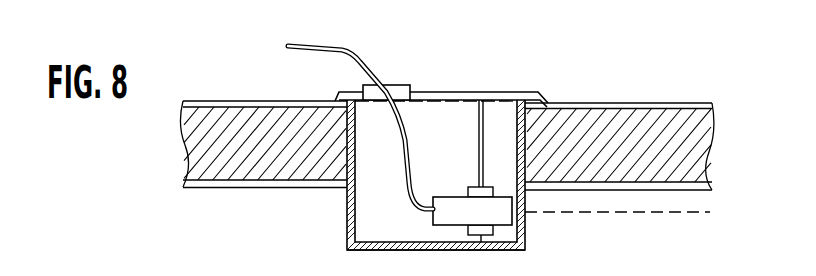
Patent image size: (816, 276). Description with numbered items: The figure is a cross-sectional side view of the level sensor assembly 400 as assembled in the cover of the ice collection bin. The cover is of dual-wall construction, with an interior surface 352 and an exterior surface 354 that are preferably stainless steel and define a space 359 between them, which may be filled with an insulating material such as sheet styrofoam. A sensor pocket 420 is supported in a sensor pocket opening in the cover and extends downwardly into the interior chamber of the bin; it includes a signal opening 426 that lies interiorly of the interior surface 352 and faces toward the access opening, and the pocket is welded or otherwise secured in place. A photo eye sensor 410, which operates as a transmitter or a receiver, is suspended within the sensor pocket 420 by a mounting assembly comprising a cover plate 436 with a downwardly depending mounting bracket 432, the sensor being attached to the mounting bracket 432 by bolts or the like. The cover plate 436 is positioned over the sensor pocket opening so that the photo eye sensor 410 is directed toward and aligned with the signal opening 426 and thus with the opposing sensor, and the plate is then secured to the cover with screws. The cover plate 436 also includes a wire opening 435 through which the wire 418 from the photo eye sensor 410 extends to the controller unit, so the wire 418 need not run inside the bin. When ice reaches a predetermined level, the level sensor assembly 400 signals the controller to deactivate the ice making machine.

The exterior surface 354 is at (232, 101).
The space 359 is at (197, 137).
The interior surface 352 is at (232, 188).
The sensor pocket 420 is at (347, 217).
The cover plate 436 is at (522, 93).
The wire opening 435 is at (403, 84).
The signal opening 426 is at (525, 222).
The mounting bracket 432 is at (483, 126).
The wire 418 is at (358, 54).
The photo eye sensor 410 is at (500, 220).
The level sensor assembly 400 is at (300, 248).